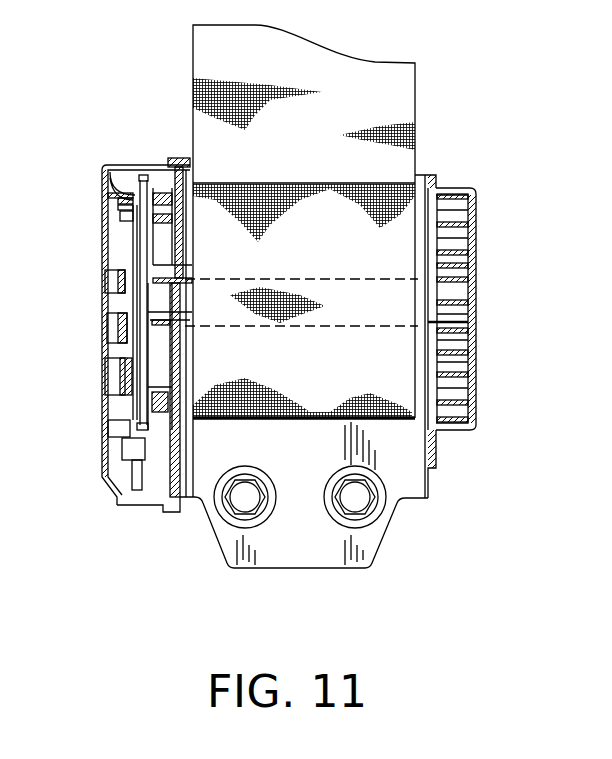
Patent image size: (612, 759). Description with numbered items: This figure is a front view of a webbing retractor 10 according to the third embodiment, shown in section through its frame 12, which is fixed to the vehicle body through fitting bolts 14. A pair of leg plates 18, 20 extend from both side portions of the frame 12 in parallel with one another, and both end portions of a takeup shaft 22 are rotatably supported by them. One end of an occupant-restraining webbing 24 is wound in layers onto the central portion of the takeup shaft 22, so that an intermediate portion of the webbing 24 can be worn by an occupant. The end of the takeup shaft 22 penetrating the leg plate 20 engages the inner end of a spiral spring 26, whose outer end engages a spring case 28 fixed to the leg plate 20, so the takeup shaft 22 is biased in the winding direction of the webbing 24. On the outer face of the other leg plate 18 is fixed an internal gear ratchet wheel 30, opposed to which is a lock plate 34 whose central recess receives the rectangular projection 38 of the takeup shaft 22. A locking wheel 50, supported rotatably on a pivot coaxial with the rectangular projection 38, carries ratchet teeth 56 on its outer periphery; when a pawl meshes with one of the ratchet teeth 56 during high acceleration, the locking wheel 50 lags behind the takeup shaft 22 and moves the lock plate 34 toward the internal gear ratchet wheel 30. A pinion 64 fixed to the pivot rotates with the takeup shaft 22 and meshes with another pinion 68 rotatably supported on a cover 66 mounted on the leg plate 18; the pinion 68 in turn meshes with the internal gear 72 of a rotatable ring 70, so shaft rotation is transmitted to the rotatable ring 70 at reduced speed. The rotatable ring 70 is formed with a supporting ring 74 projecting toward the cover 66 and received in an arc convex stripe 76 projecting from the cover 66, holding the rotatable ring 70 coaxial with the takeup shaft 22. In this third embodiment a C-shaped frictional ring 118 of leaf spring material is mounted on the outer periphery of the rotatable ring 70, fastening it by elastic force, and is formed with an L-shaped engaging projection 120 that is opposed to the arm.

The webbing retractor 10 is at (459, 168).
The frame 12 is at (287, 568).
The fitting bolts 14 is at (245, 480).
The leg plate 18 is at (163, 482).
The leg plate 20 is at (432, 492).
The takeup shaft 22 is at (268, 278).
The occupant-restraining webbing 24 is at (418, 92).
The spiral spring 26 is at (453, 216).
The spring case 28 is at (476, 272).
The internal gear ratchet wheel 30 is at (163, 187).
The lock plate 34 is at (183, 255).
The rectangular projection 38 is at (160, 322).
The locking wheel 50 is at (128, 165).
The ratchet teeth 56 is at (143, 175).
The pinion 64 is at (118, 282).
The cover 66 is at (108, 343).
The pinion 68 is at (112, 383).
The rotatable ring 70 is at (112, 182).
The internal gear 72 is at (125, 221).
The supporting ring 74 is at (122, 212).
The arc convex stripe 76 is at (118, 203).
The frictional ring 118 is at (115, 197).
The engaging projection 120 is at (115, 432).